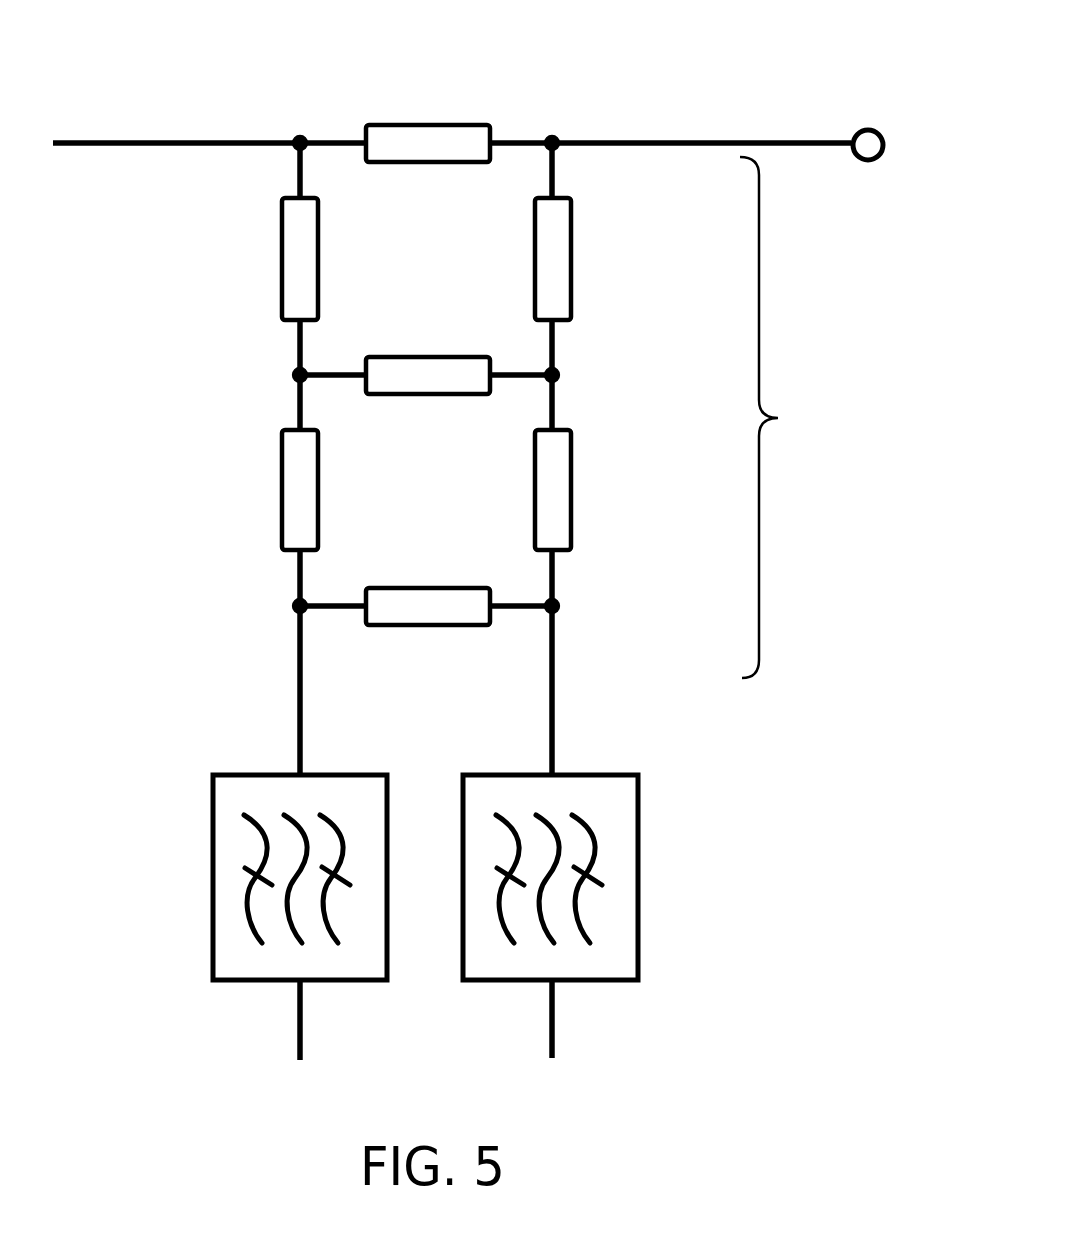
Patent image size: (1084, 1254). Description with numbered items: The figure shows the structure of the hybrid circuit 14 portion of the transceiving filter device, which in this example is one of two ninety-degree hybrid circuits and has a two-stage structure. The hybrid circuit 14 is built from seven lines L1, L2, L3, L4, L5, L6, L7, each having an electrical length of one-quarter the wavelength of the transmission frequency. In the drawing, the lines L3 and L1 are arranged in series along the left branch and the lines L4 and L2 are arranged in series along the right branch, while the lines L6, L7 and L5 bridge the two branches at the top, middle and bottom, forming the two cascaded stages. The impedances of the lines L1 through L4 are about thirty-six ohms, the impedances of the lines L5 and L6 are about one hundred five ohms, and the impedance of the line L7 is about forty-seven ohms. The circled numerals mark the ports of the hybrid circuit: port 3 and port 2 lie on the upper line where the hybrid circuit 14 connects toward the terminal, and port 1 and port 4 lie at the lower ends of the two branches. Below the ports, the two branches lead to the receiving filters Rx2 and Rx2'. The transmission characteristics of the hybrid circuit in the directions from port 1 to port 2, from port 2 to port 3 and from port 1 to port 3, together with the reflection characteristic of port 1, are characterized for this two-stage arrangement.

The line L1 is at (282, 481).
The line L2 is at (571, 497).
The line L3 is at (282, 257).
The line L4 is at (571, 258).
The line L5 is at (432, 604).
The line L6 is at (432, 130).
The line L7 is at (432, 370).
The 90° hybrid circuit 14 is at (798, 417).
The receiving filter Rx2 is at (238, 877).
The receiving filter Rx2' is at (623, 877).
The port 1 is at (268, 628).
The port 2 is at (548, 107).
The port 3 is at (300, 106).
The port 4 is at (585, 630).